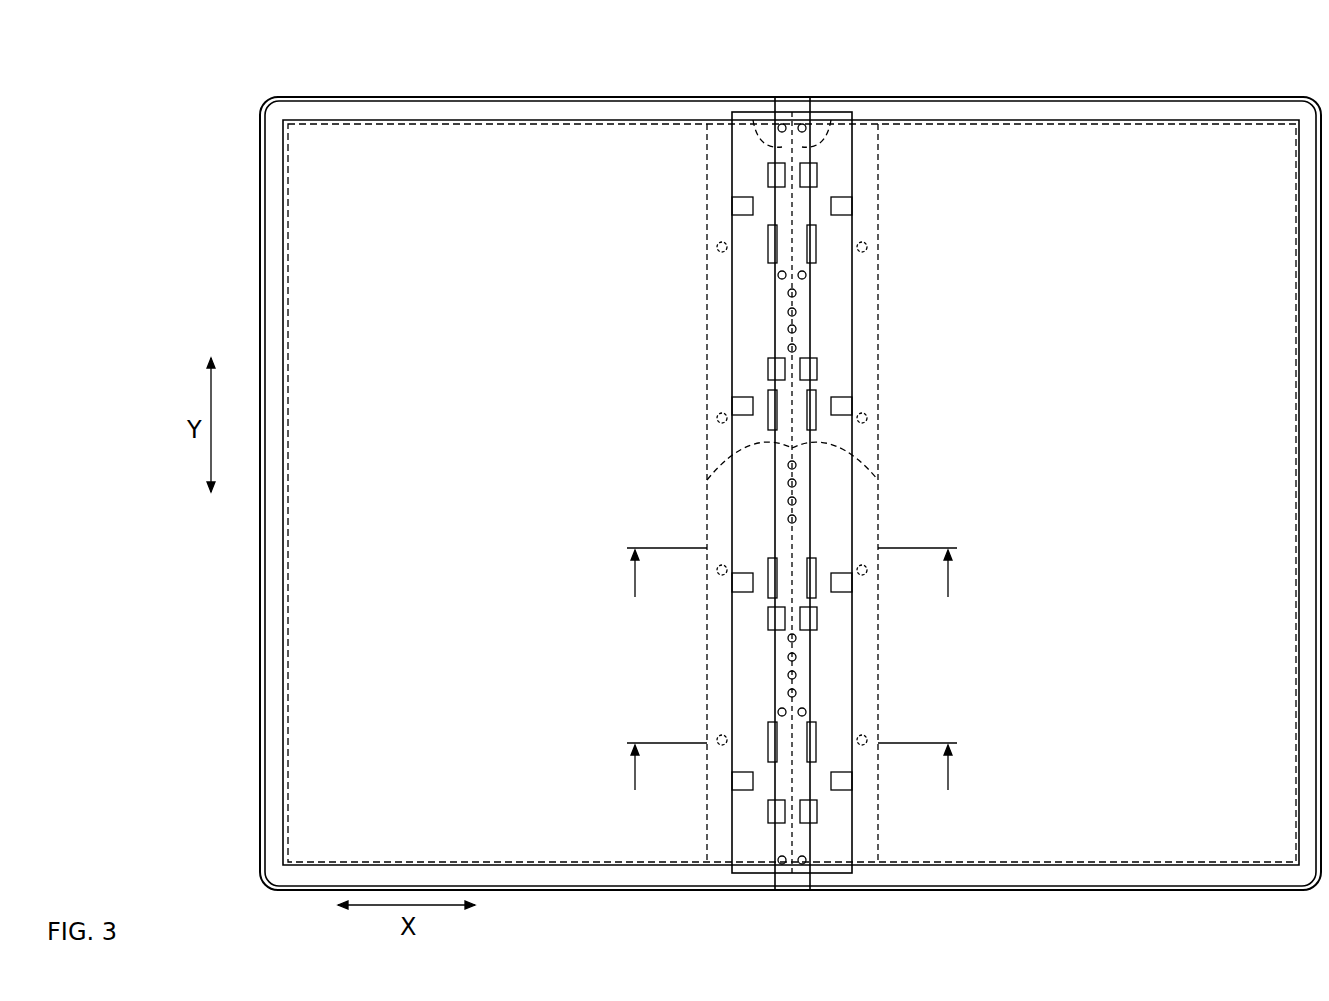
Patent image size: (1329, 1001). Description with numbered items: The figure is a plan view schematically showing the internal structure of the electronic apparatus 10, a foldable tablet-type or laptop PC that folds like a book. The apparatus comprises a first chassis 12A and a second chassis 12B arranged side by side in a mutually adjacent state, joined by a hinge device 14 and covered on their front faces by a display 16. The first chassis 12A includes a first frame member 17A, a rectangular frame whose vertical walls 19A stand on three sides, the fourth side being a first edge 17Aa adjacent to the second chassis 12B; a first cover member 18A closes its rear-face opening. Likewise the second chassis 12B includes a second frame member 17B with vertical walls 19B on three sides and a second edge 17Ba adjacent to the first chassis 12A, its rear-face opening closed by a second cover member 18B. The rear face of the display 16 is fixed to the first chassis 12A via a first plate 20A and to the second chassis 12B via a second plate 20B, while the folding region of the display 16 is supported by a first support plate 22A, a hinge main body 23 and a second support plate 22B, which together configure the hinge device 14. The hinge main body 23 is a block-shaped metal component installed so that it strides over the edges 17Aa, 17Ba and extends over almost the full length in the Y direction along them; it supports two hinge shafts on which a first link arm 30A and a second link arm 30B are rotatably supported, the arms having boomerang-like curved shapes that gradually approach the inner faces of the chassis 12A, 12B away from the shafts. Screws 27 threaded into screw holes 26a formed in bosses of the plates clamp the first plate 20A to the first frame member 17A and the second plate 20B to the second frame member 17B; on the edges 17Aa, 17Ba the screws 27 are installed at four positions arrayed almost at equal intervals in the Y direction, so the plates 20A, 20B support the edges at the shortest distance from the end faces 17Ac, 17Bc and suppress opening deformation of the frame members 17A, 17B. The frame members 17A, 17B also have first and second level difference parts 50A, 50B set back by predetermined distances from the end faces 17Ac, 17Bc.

The electronic apparatus 10 is at (214, 51).
The first chassis 12A is at (421, 84).
The second chassis 12B is at (1138, 84).
The hinge device 14 is at (840, 330).
The display 16 is at (1226, 118).
The first frame member 17A is at (528, 96).
The second frame member 17B is at (1053, 96).
The first edge 17Aa is at (775, 110).
The second edge 17Ba is at (810, 110).
The end face 17Ac is at (878, 480).
The end face 17Bc is at (707, 480).
The first cover member 18A is at (592, 148).
The second cover member 18B is at (985, 148).
The vertical walls 19A is at (640, 890).
The vertical walls 19B is at (935, 890).
The first plate 20A is at (545, 842).
The second plate 20B is at (1040, 842).
The first support plate 22A is at (742, 655).
The second support plate 22B is at (842, 655).
The hinge main body 23 is at (785, 318).
The screw hole 26a is at (716, 247).
The screw 27 is at (820, 493).
The first link arm 30A is at (768, 227).
The second link arm 30B is at (817, 227).
The first level difference part 50A is at (718, 152).
The second level difference part 50B is at (866, 152).